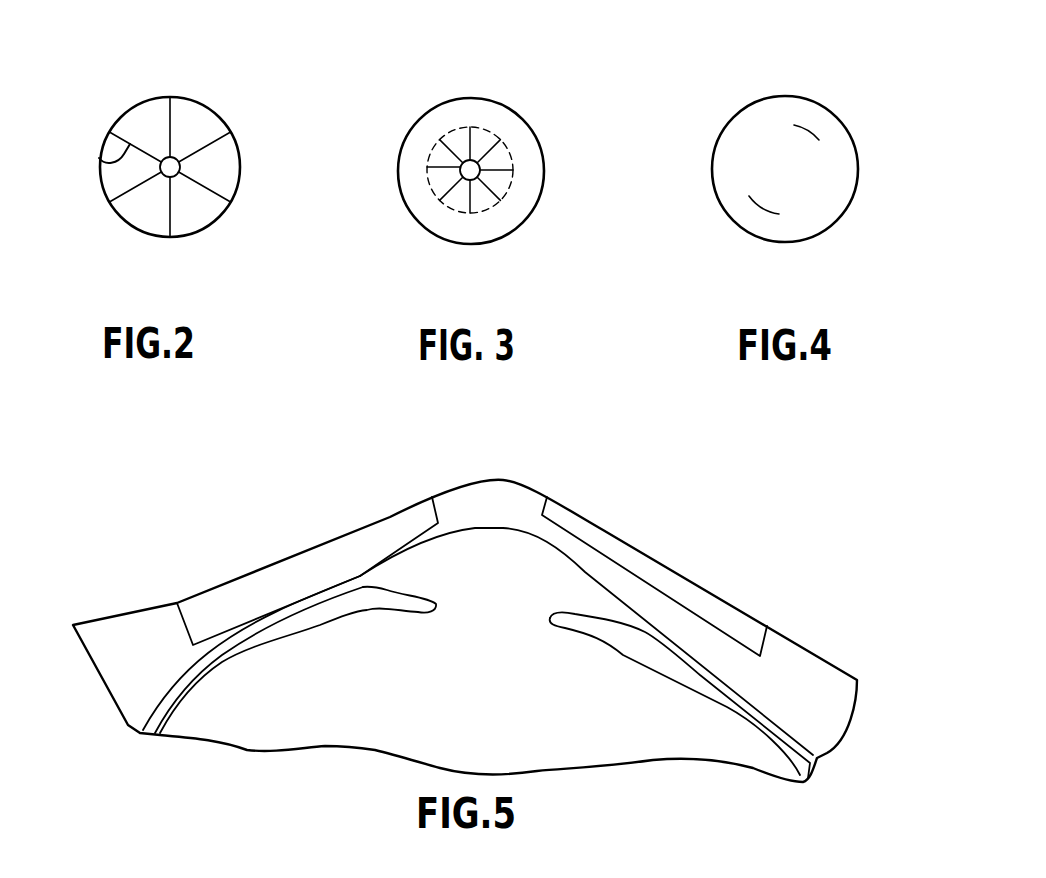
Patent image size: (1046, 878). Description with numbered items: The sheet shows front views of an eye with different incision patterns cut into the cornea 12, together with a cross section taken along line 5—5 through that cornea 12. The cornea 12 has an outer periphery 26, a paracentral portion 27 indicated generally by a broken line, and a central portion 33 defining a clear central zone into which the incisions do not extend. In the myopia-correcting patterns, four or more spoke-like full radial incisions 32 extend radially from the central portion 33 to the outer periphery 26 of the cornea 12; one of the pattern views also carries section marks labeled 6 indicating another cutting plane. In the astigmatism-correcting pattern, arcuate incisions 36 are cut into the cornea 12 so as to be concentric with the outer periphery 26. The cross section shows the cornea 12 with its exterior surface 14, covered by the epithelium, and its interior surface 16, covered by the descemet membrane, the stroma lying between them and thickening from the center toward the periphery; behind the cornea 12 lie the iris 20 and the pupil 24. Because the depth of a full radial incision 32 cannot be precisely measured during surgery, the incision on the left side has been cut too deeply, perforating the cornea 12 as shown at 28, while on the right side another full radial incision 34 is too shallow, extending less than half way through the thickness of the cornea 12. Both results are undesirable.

In FIG. 2, the section line 5— 5 is at (242, 119).
In FIG. 3, the section line 6- 6 is at (411, 104).
In FIG. 2, the cornea 12 is at (192, 121).
In FIG. 3, the cornea 12 is at (475, 107).
In FIG. 4, the cornea 12 is at (835, 148).
In FIG. 5, the cornea 12 is at (166, 637).
In FIG. 5, the exterior surface 14 is at (507, 481).
In FIG. 5, the interior surface 16 is at (503, 529).
In FIG. 5, the iris 20 is at (389, 600).
In FIG. 5, the pupil 24 is at (493, 608).
In FIG. 2, the outer periphery 26 is at (150, 238).
In FIG. 3, the outer periphery 26 is at (527, 118).
In FIG. 4, the outer periphery 26 is at (728, 118).
In FIG. 3, the paracentral portion 27 is at (460, 211).
In FIG. 5, the perforation 28 is at (377, 567).
In FIG. 2, the full radial incisions 32 is at (98, 158).
In FIG. 5, the full radial incisions 32 is at (383, 537).
In FIG. 2, the central portion 33 is at (166, 155).
In FIG. 3, the central portion 33 is at (452, 163).
In FIG. 3, the full radial incision 34 is at (500, 167).
In FIG. 4, the arcuate incisions 36 is at (800, 122).